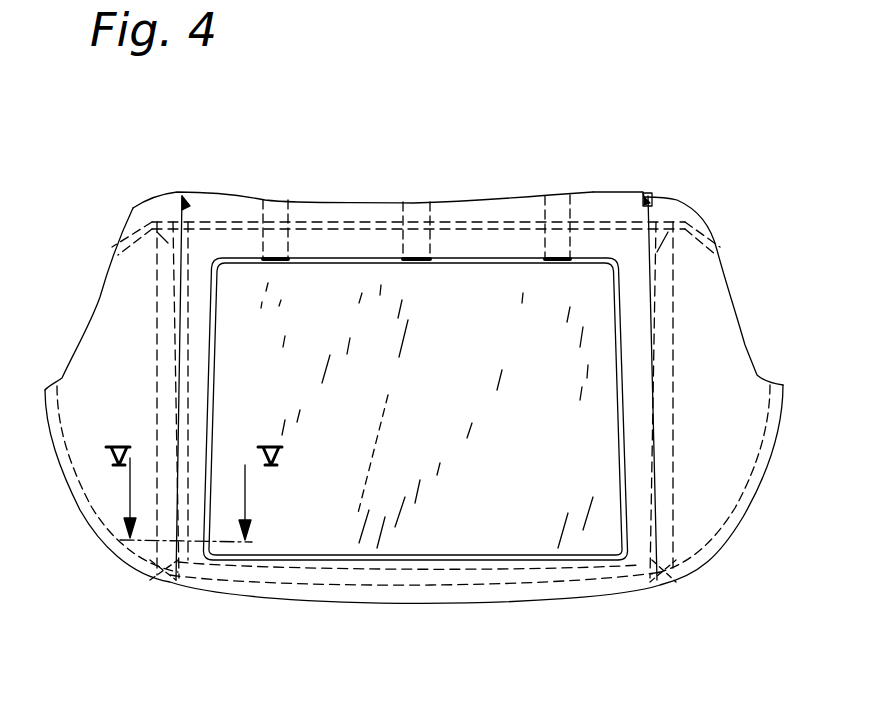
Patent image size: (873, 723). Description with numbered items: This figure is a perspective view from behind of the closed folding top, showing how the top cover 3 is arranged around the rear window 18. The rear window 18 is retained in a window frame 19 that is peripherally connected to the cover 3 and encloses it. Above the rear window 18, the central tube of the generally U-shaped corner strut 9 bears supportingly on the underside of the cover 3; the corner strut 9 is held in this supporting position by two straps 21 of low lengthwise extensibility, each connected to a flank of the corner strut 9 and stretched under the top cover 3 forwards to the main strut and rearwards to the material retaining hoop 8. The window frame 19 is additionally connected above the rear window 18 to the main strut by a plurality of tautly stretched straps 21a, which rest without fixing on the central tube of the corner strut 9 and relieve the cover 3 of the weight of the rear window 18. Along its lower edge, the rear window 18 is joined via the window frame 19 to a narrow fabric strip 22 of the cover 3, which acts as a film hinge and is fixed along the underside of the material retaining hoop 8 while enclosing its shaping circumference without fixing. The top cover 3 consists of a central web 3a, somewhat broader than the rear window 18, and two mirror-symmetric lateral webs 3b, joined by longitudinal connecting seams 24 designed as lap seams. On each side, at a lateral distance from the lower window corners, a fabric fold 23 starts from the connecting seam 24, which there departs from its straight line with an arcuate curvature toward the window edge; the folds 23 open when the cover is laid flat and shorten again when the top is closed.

The top cover 3 is at (603, 180).
The central web 3a is at (340, 207).
The lateral web 3b is at (110, 305).
The material retaining hoop 8 is at (753, 467).
The corner strut 9 is at (486, 222).
The rear window 18 is at (517, 520).
The window frame 19 is at (307, 568).
The strap 21 is at (163, 240).
The strap 21a is at (273, 208).
The fabric strip 22 is at (430, 573).
The fabric fold 23 is at (158, 557).
The connecting seam 24 is at (180, 193).